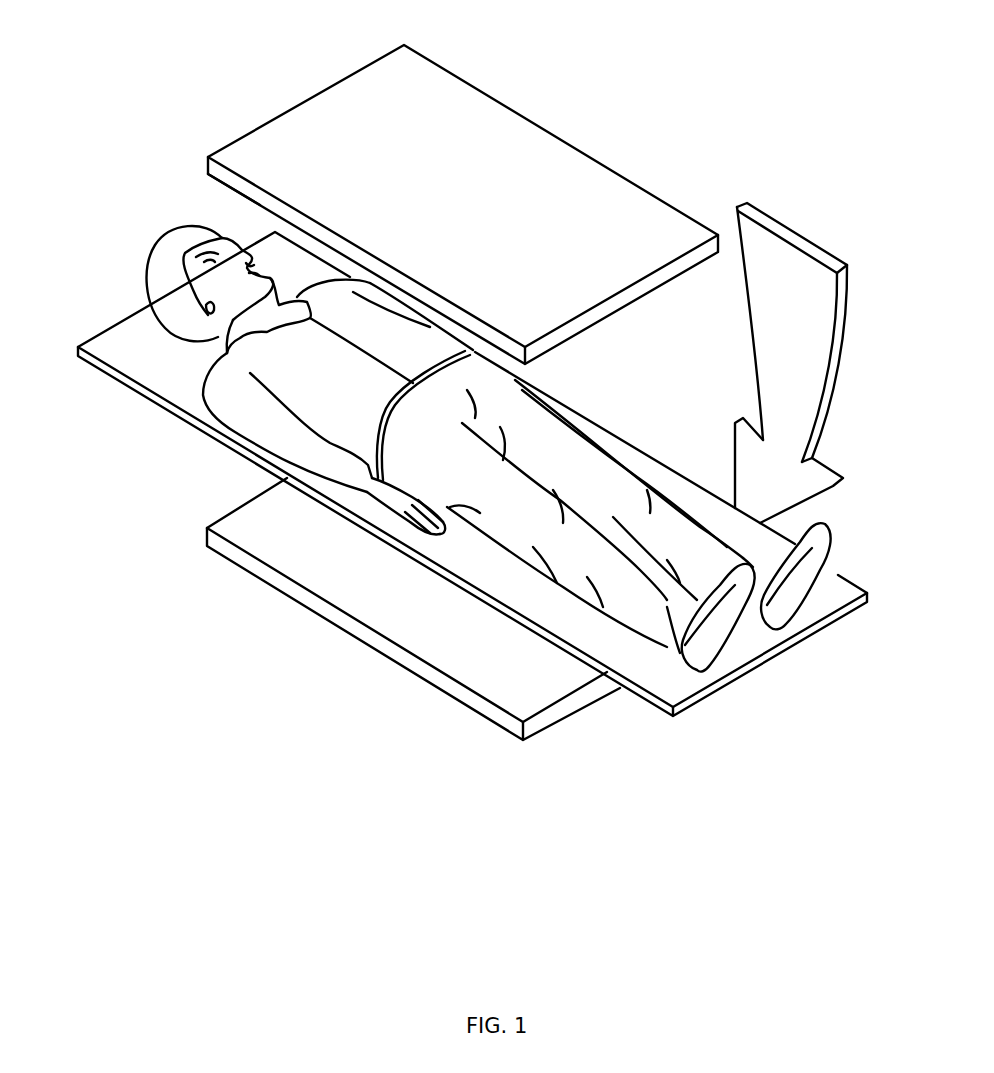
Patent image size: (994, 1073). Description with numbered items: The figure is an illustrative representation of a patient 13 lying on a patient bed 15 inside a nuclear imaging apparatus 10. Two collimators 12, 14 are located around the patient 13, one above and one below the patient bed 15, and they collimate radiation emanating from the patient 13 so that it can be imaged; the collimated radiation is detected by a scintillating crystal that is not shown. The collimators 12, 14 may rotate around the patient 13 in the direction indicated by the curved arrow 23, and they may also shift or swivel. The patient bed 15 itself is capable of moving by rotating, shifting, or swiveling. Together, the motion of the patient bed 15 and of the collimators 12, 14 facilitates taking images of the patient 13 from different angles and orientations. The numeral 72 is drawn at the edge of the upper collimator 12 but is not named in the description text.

The nuclear imaging apparatus 10 is at (207, 91).
The collimator 12 is at (477, 108).
The patient 13 is at (163, 287).
The collimator 14 is at (270, 577).
The patient bed 15 is at (117, 344).
The arrow 23 is at (818, 337).
The edge of upper panel 72 is at (206, 171).